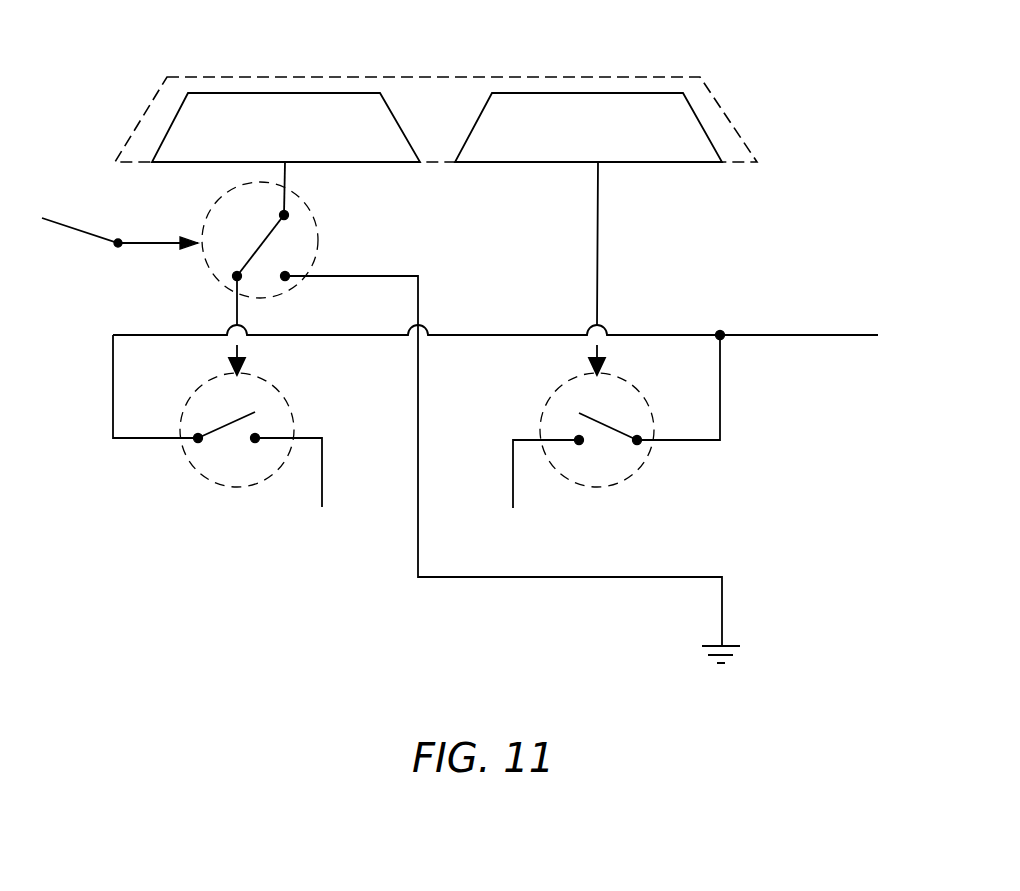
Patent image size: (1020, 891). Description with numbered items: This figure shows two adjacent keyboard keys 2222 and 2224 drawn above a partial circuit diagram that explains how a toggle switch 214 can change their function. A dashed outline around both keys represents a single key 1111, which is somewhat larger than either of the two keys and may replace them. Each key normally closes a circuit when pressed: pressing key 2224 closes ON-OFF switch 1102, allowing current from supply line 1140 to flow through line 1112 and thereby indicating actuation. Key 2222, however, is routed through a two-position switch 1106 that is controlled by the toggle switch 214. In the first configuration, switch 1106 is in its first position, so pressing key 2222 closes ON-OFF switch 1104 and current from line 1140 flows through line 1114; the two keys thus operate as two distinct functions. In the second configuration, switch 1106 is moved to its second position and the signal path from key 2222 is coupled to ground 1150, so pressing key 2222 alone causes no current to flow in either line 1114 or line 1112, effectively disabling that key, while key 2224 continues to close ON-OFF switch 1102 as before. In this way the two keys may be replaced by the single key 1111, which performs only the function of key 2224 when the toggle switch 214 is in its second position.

The single key 1111 is at (490, 77).
The key 2222 is at (210, 137).
The key 2224 is at (673, 137).
The toggle switch 214 is at (78, 228).
The switch 1106 is at (318, 238).
The ON-OFF switch 1104 is at (200, 468).
The line 1114 is at (322, 493).
The ON-OFF switch 1102 is at (637, 470).
The line 1112 is at (513, 493).
The line 1140 is at (823, 335).
The ground 1150 is at (733, 646).